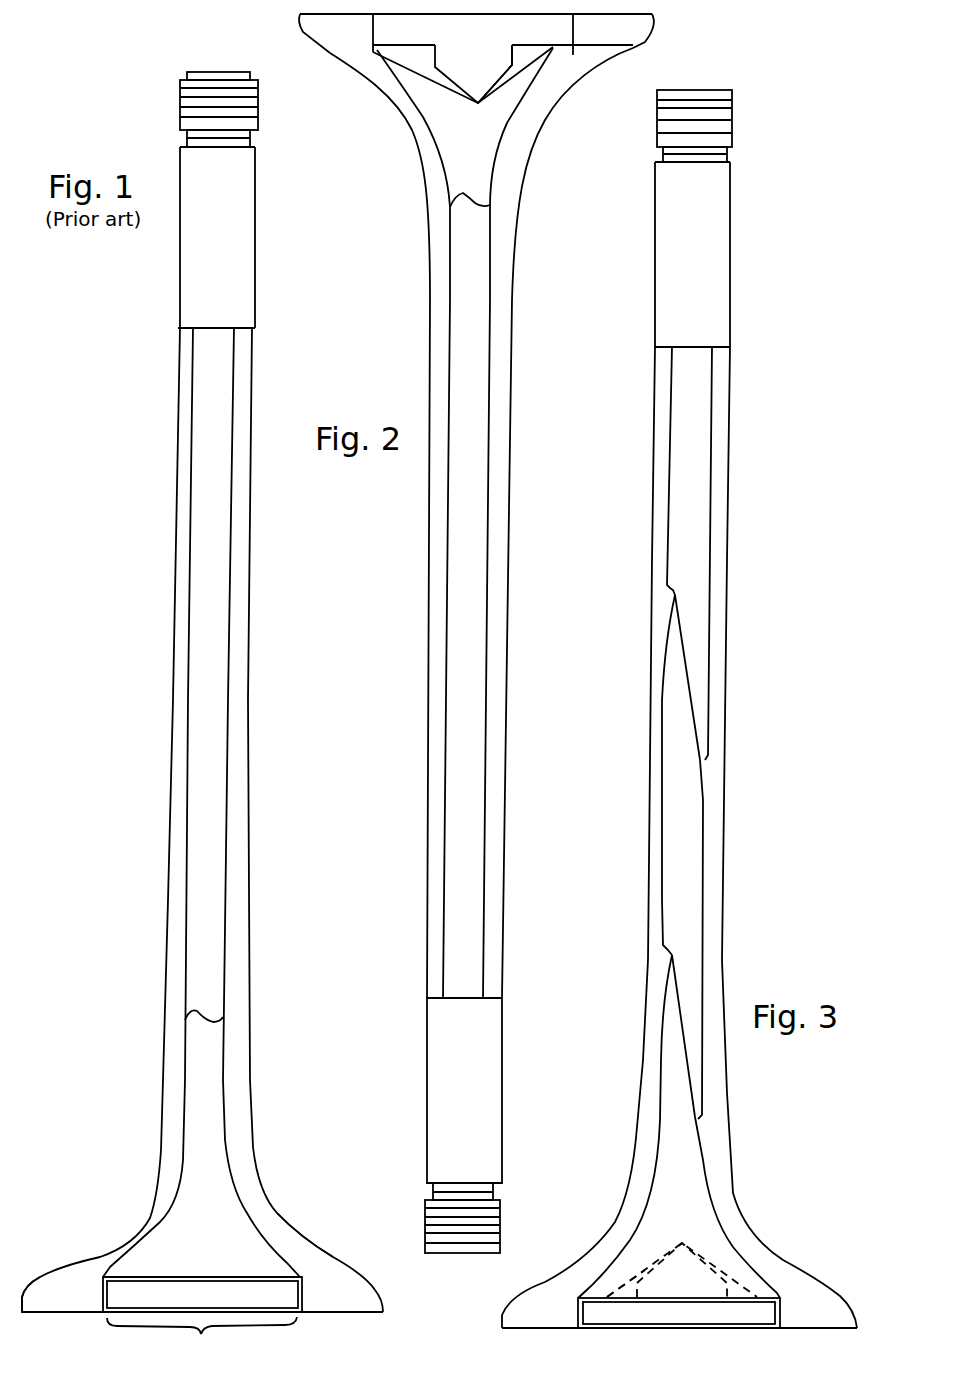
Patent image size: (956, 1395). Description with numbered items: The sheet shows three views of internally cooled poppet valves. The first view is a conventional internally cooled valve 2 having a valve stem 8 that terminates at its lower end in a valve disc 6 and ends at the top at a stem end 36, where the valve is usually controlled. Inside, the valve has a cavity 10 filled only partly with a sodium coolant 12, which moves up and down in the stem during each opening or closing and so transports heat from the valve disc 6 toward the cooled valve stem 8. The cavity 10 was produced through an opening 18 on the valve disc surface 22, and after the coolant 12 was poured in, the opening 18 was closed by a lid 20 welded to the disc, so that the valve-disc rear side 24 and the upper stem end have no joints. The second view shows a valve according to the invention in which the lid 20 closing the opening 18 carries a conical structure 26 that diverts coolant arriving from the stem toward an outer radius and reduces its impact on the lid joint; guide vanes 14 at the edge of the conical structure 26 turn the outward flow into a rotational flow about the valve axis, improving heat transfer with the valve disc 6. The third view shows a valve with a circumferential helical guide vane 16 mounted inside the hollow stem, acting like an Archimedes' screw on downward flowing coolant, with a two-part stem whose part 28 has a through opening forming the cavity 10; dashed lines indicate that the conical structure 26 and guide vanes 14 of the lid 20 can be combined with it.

In FIG. 1, the internally cooled valve 2 is at (117, 453).
In FIG. 1, the stem end 36 is at (175, 107).
In FIG. 1, the valve stem 8 is at (168, 788).
In FIG. 1, the coolant 12 is at (197, 900).
In FIG. 2, the coolant 12 is at (463, 723).
In FIG. 1, the cavity 10 is at (202, 1253).
In FIG. 2, the cavity 10 is at (481, 523).
In FIG. 3, the cavity 10 is at (679, 1144).
In FIG. 1, the lid 20 is at (202, 1305).
In FIG. 2, the lid 20 is at (476, 34).
In FIG. 3, the lid 20 is at (679, 1313).
In FIG. 1, the valve disc 6 is at (47, 1291).
In FIG. 1, the opening 18 is at (207, 1333).
In FIG. 1, the valve-disc rear side 24 is at (293, 1235).
In FIG. 1, the valve disc surface 22 is at (333, 1327).
In FIG. 2, the conical structure 26 is at (463, 74).
In FIG. 3, the conical structure 26 is at (682, 1270).
In FIG. 2, the guide vanes 14 is at (522, 57).
In FIG. 3, the guide vanes 14 is at (627, 1290).
In FIG. 3, the helical guide vane 16 is at (700, 762).
In FIG. 3, the stem part 28 is at (720, 362).